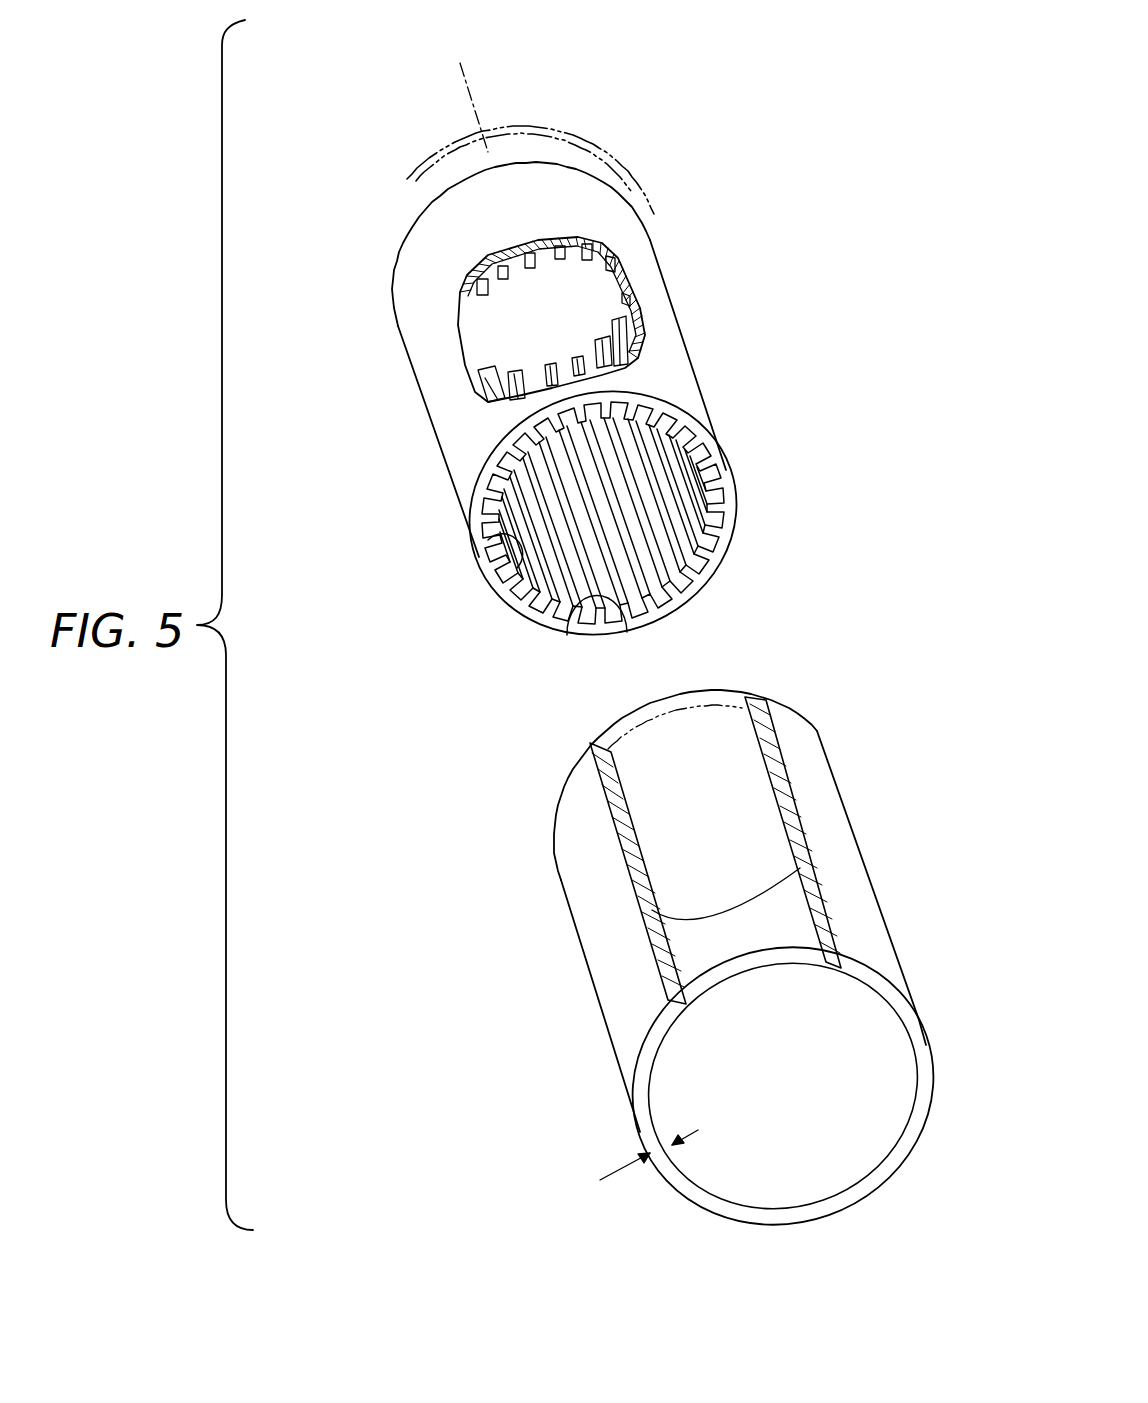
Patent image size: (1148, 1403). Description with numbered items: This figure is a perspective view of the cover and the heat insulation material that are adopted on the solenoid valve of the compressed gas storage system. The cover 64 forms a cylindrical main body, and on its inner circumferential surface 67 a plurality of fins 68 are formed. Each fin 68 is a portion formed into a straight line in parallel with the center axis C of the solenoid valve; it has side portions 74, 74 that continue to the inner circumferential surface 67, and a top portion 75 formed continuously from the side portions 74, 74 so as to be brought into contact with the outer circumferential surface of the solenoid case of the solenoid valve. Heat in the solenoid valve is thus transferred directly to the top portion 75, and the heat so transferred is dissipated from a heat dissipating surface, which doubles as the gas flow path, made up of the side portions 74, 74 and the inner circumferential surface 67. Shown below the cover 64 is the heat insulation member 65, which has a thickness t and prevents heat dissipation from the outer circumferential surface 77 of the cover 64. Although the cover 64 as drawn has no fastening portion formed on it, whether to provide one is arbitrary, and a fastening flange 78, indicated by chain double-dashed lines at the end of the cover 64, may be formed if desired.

The cover 64 is at (531, 435).
The heat insulation member 65 is at (566, 871).
The inner circumferential surface 67 is at (488, 499).
The fin 68 is at (477, 550).
The side portion 74 is at (480, 527).
The top portion 75 is at (493, 582).
The outer circumferential surface 77 is at (440, 403).
The fastening flange 78 is at (633, 167).
The center axis C is at (468, 76).
The thickness t is at (649, 1155).